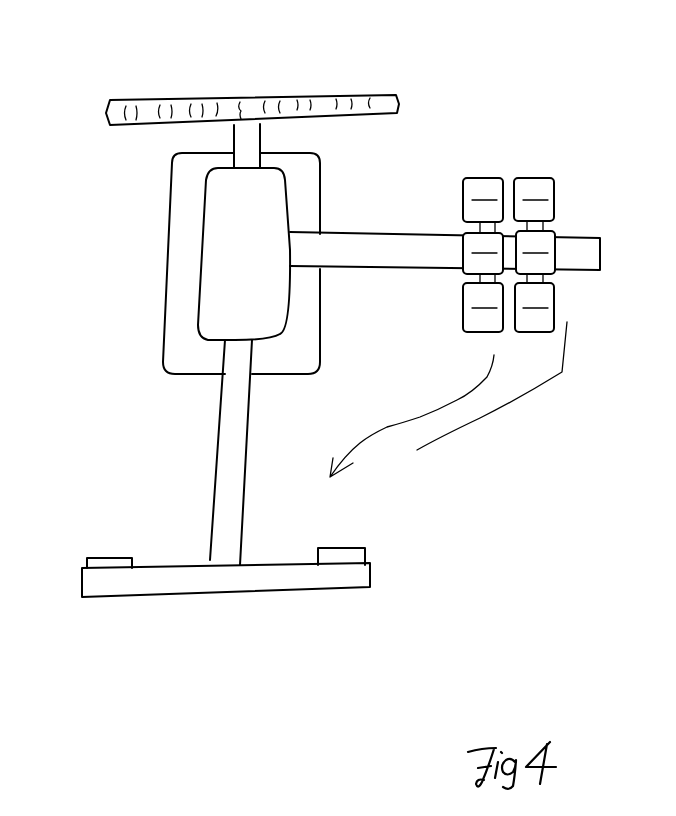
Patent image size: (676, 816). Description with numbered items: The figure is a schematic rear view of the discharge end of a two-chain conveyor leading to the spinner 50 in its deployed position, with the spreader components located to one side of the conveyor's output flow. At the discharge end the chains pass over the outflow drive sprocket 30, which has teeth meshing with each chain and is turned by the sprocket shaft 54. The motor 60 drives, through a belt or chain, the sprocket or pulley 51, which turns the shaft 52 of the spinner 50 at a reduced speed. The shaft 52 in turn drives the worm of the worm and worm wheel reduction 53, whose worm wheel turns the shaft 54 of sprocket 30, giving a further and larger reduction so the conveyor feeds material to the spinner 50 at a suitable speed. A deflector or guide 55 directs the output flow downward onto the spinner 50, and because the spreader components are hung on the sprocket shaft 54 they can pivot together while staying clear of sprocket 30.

The outflow drive sprocket 30 is at (544, 229).
The spinner 50 is at (148, 595).
The sprocket or pulley 51 is at (148, 97).
The shaft of spinner 52 is at (217, 470).
The worm and worm wheel reduction 53 is at (210, 322).
The shaft of sprocket 54 is at (384, 233).
The deflector or guide 55 is at (527, 398).
The motor 60 is at (178, 262).